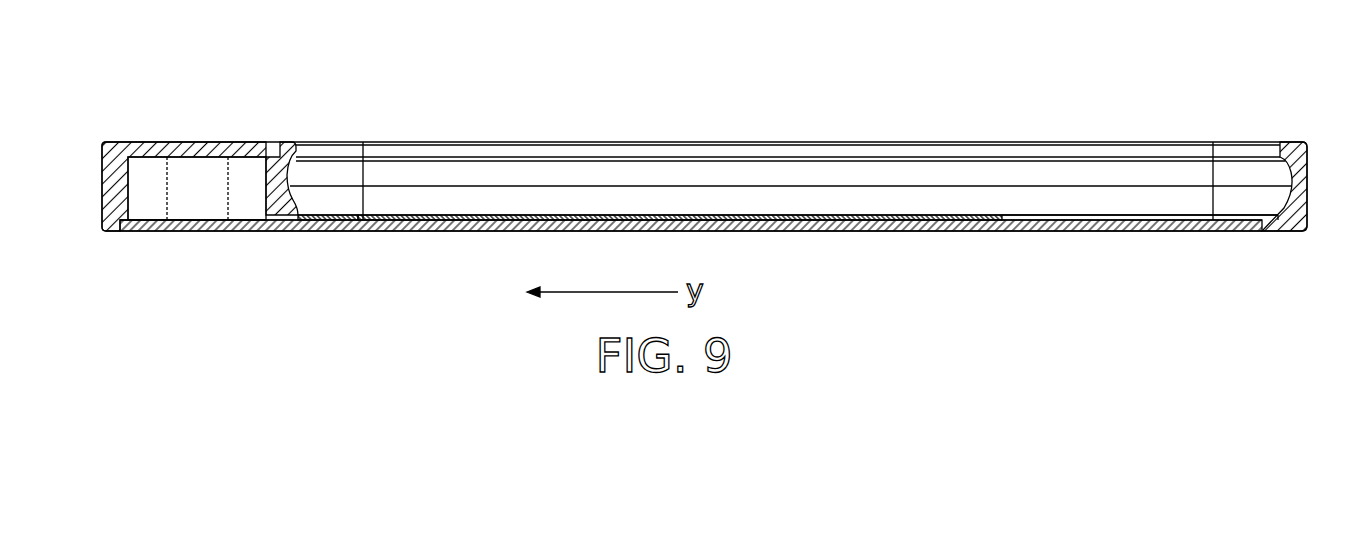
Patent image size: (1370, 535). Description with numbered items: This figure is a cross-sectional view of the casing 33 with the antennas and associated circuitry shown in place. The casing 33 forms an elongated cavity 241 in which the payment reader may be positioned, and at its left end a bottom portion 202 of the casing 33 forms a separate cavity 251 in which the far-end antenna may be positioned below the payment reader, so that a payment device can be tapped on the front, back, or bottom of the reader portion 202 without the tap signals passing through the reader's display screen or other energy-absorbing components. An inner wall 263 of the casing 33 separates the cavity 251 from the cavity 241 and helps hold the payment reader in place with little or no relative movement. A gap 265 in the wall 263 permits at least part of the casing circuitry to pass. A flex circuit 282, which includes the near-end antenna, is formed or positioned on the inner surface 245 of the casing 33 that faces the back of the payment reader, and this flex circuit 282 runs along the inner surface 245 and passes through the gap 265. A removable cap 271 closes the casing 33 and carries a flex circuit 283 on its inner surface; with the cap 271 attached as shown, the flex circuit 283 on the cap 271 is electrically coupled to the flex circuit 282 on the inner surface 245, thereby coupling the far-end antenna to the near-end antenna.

The casing 33 is at (422, 142).
The cavity 241 is at (1097, 172).
The bottom portion 202 is at (182, 142).
The cavity 251 is at (153, 178).
The flex circuit 283 is at (178, 218).
The removable cap 271 is at (135, 226).
The inner wall 263 is at (278, 158).
The gap 265 is at (300, 217).
The flex circuit 282 is at (788, 217).
The inner surface 245 is at (1052, 220).